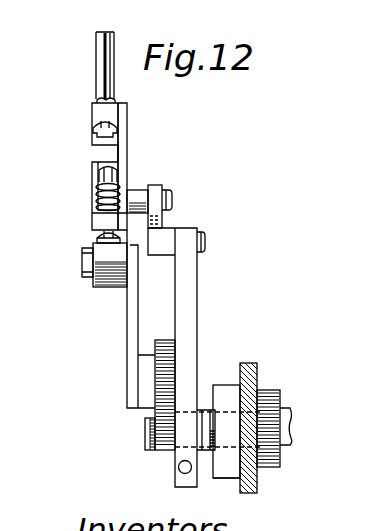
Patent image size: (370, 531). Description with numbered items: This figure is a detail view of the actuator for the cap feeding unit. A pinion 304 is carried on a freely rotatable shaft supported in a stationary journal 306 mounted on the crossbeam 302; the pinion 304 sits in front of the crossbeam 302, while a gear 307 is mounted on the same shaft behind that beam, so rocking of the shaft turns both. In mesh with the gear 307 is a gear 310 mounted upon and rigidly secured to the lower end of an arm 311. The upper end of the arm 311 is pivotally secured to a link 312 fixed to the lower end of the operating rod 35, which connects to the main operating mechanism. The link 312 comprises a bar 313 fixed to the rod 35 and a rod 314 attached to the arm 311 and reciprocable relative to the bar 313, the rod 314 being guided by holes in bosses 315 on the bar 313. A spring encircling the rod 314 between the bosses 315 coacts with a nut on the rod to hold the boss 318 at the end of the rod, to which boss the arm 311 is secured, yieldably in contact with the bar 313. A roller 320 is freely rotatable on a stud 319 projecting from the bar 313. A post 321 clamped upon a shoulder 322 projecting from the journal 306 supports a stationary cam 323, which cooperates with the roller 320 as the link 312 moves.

The rod or actuator 35 is at (113, 43).
The link 312 is at (137, 127).
The bar 313 is at (127, 160).
The bosses 315 is at (92, 218).
The rod 314 is at (97, 237).
The boss 318 is at (93, 285).
The stud 319 is at (138, 192).
The roller 320 is at (163, 186).
The stationary cam 323 is at (158, 222).
The post 321 is at (190, 270).
The arm 311 is at (130, 357).
The gear 310 is at (175, 337).
The gear 307 is at (162, 456).
The crossbeam 302 is at (153, 432).
The shoulder 322 is at (202, 410).
The pinion 304 is at (271, 392).
The stationary journal 306 is at (213, 478).